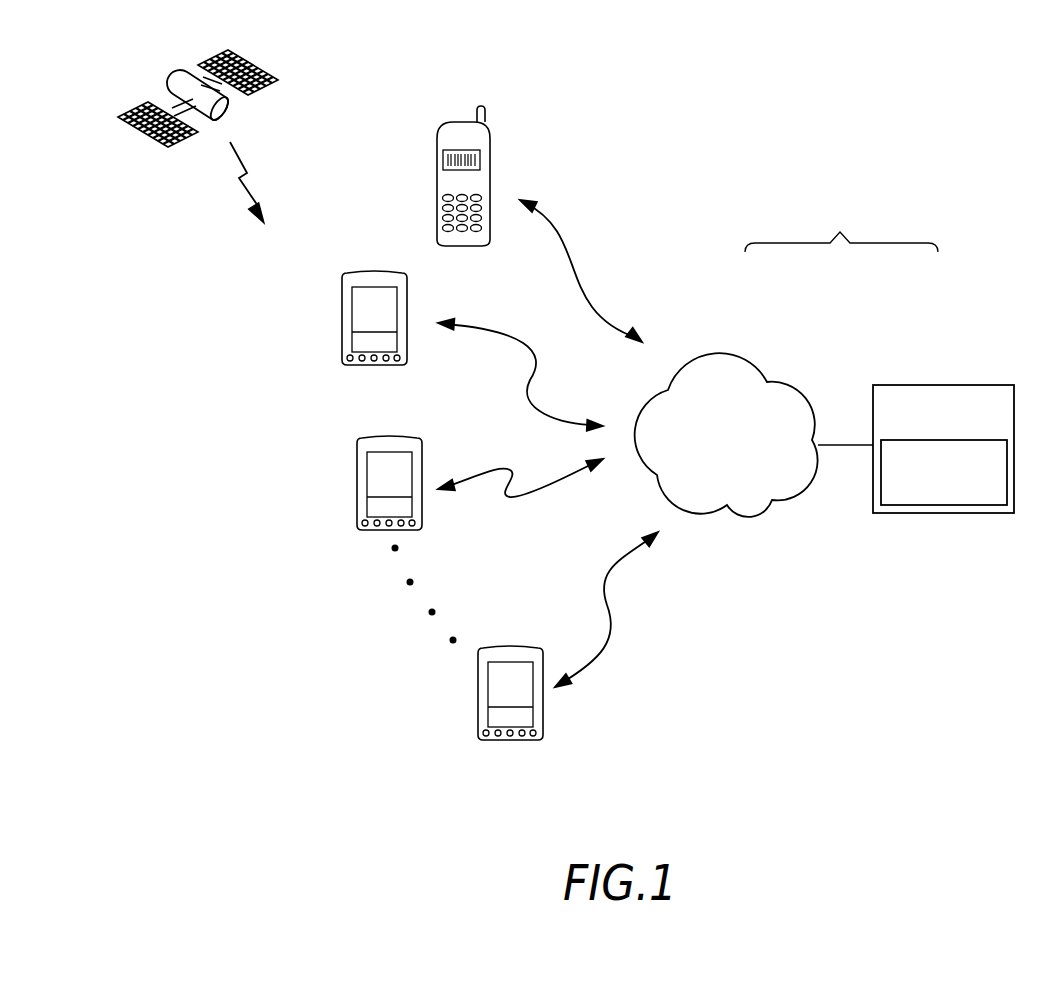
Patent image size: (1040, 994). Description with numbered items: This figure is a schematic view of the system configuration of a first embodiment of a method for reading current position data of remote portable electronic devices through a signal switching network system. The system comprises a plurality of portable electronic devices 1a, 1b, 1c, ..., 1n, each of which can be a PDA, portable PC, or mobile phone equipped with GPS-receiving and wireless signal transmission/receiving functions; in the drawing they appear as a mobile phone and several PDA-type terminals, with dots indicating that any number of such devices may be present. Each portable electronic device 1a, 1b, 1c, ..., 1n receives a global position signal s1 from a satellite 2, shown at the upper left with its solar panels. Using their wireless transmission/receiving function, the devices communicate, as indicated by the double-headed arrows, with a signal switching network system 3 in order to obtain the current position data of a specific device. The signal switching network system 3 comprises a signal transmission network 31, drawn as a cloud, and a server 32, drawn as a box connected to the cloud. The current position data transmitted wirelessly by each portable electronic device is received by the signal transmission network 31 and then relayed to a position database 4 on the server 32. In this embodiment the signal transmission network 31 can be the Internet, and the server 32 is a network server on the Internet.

The portable electronic device 1a is at (440, 185).
The portable electronic device 1b is at (360, 318).
The portable electronic device 1c is at (375, 485).
The portable electronic device 1n is at (495, 718).
The satellite 2 is at (178, 87).
The global position signal s1 is at (245, 187).
The signal switching network system 3 is at (824, 407).
The signal transmission network 31 is at (733, 372).
The server 32 is at (943, 440).
The position database 4 is at (953, 502).